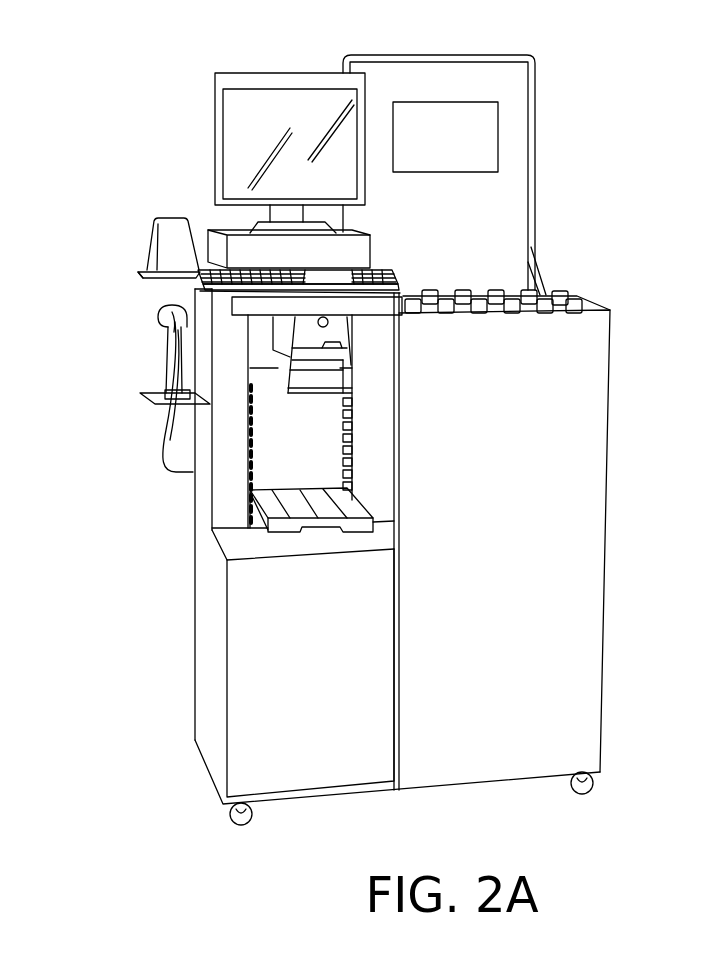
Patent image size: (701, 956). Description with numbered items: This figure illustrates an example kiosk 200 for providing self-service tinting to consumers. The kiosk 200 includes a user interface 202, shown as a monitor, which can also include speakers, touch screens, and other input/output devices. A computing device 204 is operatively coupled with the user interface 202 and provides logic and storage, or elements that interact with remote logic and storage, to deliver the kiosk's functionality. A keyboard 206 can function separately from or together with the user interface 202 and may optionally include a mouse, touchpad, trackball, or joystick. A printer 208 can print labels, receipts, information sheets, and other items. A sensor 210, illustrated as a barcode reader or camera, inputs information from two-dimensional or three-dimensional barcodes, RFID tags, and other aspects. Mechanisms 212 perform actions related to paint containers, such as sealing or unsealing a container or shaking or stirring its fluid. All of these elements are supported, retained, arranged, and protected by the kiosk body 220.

The kiosk 200 is at (148, 472).
The user interface 202 is at (263, 117).
The computing device 204 is at (247, 253).
The keyboard 206 is at (310, 265).
The printer 208 is at (170, 231).
The sensor 210 is at (172, 352).
The mechanisms 212 is at (293, 432).
The kiosk body 220 is at (432, 760).